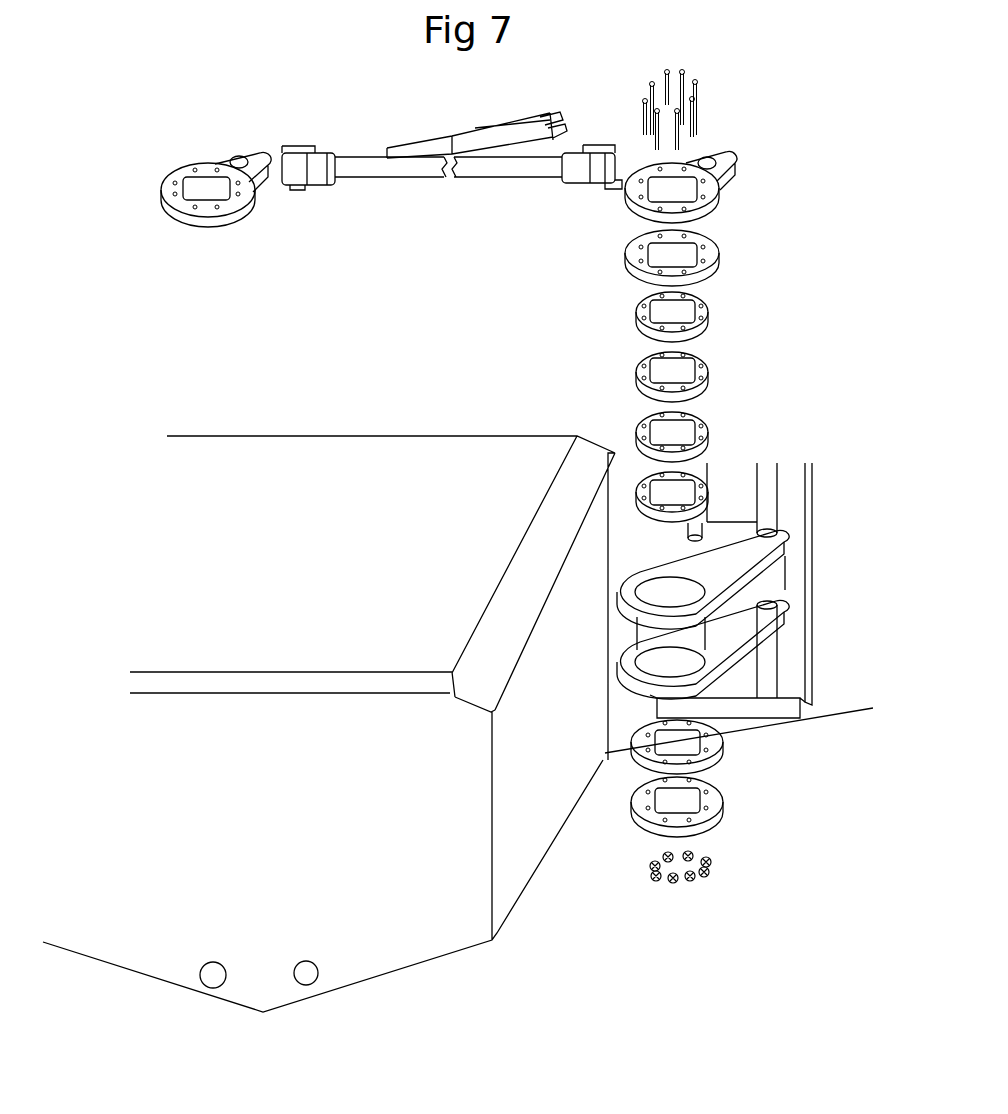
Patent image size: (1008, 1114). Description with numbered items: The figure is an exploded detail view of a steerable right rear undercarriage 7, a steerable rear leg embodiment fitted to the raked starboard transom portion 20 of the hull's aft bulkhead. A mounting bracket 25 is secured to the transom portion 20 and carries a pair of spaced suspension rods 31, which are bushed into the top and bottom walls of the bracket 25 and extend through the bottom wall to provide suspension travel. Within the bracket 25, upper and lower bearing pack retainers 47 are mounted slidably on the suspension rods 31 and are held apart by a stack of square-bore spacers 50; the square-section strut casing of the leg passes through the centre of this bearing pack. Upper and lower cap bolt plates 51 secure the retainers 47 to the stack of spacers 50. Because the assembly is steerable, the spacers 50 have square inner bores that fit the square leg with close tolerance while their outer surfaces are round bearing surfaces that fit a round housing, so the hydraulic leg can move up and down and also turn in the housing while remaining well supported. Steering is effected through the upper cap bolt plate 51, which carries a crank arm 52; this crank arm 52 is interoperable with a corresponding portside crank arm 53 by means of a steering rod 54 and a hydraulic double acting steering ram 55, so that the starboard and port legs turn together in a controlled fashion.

The steerable right rear undercarriage 7 is at (739, 727).
The starboard transom portion 20 is at (456, 724).
The mounting bracket 25 is at (795, 572).
The suspension rods 31 is at (765, 508).
The bearing pack retainers 47 is at (772, 635).
The square-bore spacers 50 is at (707, 375).
The cap bolt plates 51 is at (747, 815).
The crank arm 52 is at (727, 162).
The portside crank arm 53 is at (229, 158).
The steering rod 54 is at (408, 167).
The hydraulic double acting steering ram 55 is at (482, 134).